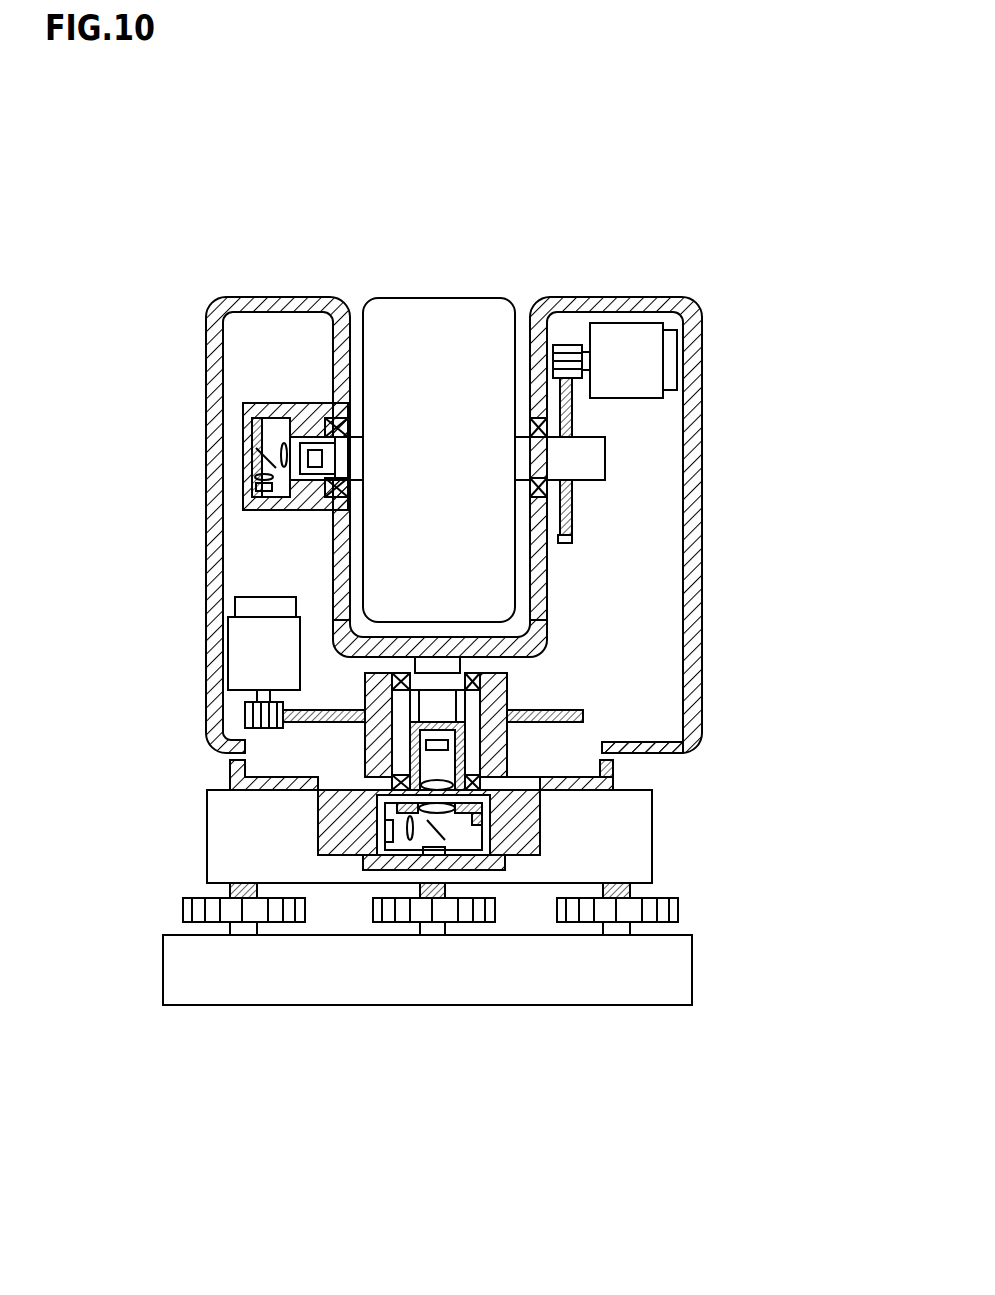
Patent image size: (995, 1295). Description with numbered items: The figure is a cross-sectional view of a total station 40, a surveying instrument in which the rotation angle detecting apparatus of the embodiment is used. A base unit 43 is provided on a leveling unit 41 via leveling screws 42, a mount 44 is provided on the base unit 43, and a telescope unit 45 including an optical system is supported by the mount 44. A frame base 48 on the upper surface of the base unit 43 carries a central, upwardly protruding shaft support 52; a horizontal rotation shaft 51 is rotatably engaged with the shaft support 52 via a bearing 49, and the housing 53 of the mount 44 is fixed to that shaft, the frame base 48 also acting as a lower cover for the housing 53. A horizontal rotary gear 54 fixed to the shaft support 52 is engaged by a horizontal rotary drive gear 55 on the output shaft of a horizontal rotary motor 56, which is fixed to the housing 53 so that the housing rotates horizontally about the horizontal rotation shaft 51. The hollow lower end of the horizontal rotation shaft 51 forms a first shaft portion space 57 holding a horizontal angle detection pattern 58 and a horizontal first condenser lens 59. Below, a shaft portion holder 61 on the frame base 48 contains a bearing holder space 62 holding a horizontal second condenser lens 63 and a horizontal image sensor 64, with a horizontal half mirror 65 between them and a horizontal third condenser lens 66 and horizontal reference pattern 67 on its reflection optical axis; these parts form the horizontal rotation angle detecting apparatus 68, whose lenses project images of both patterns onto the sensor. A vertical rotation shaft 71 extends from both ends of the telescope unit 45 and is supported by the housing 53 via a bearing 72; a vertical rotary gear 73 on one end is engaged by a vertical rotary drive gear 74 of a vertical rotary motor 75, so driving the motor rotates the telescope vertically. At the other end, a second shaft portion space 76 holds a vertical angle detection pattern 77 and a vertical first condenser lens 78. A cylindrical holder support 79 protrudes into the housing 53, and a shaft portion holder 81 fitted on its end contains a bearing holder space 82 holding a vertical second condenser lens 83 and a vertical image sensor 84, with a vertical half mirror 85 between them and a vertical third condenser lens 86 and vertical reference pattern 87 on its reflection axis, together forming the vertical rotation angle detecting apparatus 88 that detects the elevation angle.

The total station 40 is at (222, 202).
The leveling unit 41 is at (165, 962).
The leveling screws 42 is at (680, 910).
The base unit 43 is at (652, 832).
The mount 44 is at (205, 527).
The telescope unit 45 is at (445, 298).
The frame base 48 is at (615, 775).
The bearing 49 is at (512, 767).
The horizontal rotation shaft 51 is at (492, 697).
The shaft support 52 is at (512, 750).
The housing 53 is at (697, 648).
The horizontal rotary gear 54 is at (558, 710).
The horizontal rotary drive gear 55 is at (244, 715).
The horizontal rotary motor 56 is at (253, 648).
The first shaft portion space 57 is at (410, 762).
The horizontal angle detection pattern 58 is at (437, 742).
The horizontal first condenser lens 59 is at (340, 765).
The shaft portion holder 61 is at (490, 868).
The bearing holder space 62 is at (458, 868).
The horizontal second condenser lens 63 is at (480, 827).
The horizontal image sensor 64 is at (453, 868).
The horizontal half mirror 65 is at (407, 868).
The horizontal third condenser lens 66 is at (397, 868).
The horizontal reference pattern 67 is at (387, 868).
The horizontal rotation angle detecting apparatus 68 is at (515, 863).
The vertical rotation shaft 71 is at (590, 483).
The bearing 72 is at (535, 432).
The vertical rotary gear 73 is at (576, 512).
The vertical rotary drive gear 74 is at (566, 344).
The vertical rotary motor 75 is at (642, 398).
The second shaft portion space 76 is at (346, 312).
The vertical angle detection pattern 77 is at (318, 482).
The vertical first condenser lens 78 is at (310, 416).
The holder support 79 is at (298, 512).
The shaft portion holder 81 is at (255, 397).
The bearing holder space 82 is at (230, 405).
The vertical second condenser lens 83 is at (275, 417).
The vertical image sensor 84 is at (250, 430).
The vertical half mirror 85 is at (255, 470).
The vertical third condenser lens 86 is at (252, 486).
The vertical reference pattern 87 is at (287, 470).
The vertical rotation angle detecting apparatus 88 is at (243, 388).